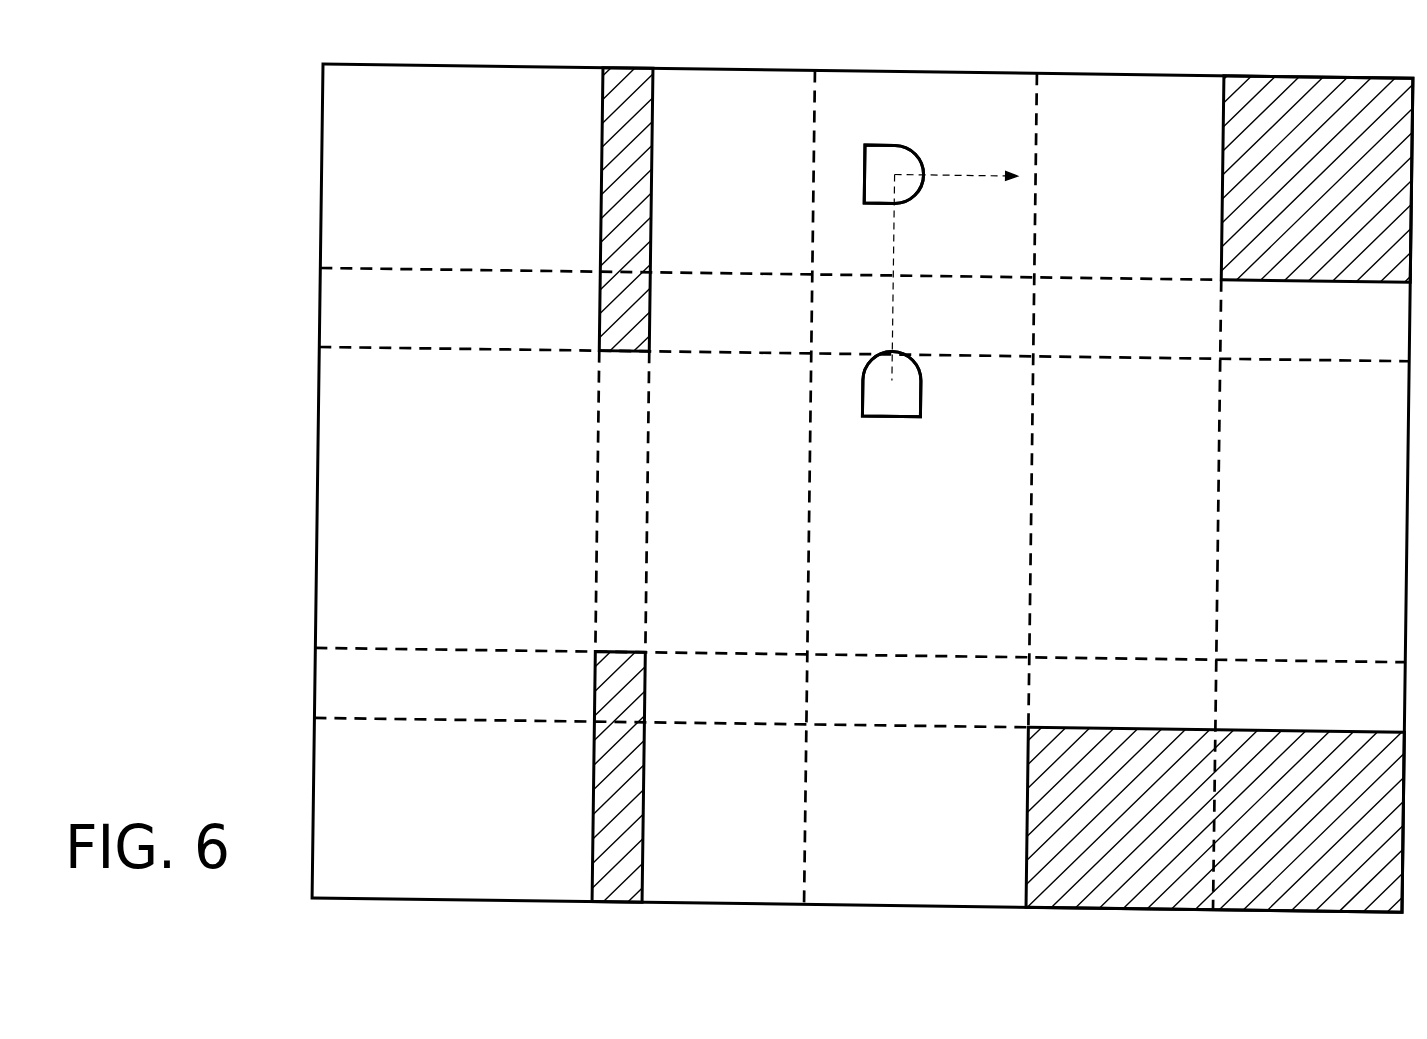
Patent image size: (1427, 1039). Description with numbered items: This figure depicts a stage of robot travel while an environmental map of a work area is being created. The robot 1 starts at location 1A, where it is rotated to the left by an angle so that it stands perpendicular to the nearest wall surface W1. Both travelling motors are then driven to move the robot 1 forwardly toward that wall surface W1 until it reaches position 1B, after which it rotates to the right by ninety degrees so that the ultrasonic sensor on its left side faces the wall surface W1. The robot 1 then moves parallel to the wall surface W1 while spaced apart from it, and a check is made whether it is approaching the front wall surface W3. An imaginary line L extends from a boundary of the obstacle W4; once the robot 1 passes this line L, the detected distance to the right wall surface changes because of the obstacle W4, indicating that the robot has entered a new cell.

The robot 1 is at (939, 303).
The location of the robot 1A is at (891, 425).
The position of the robot 1B is at (897, 114).
The wall surface W1 is at (673, 0).
The front wall surface W3 is at (1297, 154).
The obstacle W4 is at (1216, 760).
The imaginary line L is at (1059, 376).